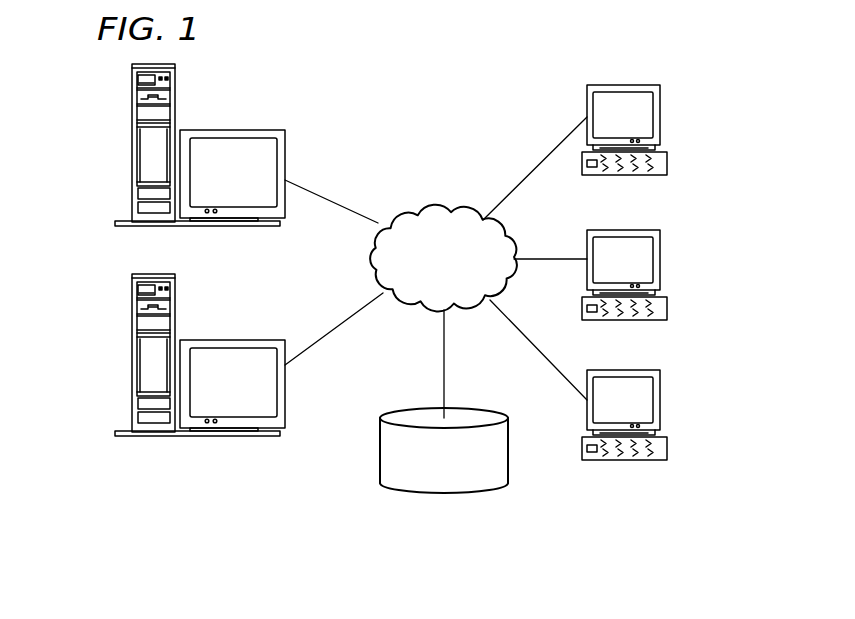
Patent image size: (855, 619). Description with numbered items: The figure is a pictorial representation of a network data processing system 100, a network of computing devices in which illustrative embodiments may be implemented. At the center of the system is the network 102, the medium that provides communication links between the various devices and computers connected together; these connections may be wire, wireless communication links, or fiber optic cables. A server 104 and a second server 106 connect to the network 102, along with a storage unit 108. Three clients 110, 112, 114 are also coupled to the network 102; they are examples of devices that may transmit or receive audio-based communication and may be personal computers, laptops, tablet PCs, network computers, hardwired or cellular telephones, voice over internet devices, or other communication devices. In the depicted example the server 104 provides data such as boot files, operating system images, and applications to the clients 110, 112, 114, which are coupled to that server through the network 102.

The network data processing system 100 is at (497, 91).
The network 102 is at (413, 208).
The server 104 is at (132, 146).
The server 106 is at (132, 356).
The storage unit 108 is at (427, 494).
The client 110 is at (661, 114).
The client 112 is at (661, 259).
The client 114 is at (661, 400).